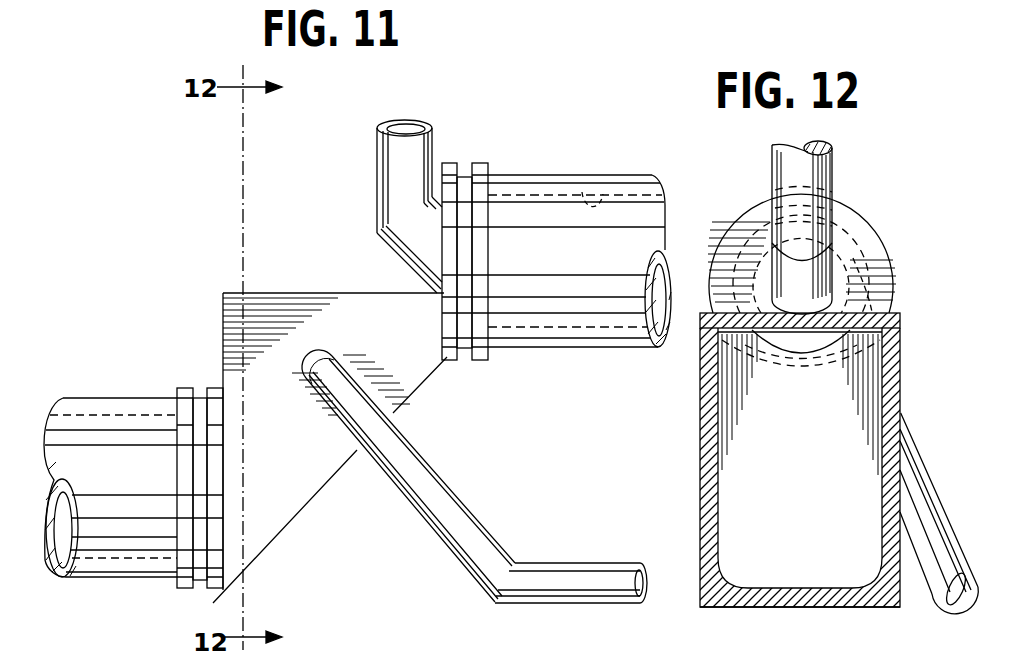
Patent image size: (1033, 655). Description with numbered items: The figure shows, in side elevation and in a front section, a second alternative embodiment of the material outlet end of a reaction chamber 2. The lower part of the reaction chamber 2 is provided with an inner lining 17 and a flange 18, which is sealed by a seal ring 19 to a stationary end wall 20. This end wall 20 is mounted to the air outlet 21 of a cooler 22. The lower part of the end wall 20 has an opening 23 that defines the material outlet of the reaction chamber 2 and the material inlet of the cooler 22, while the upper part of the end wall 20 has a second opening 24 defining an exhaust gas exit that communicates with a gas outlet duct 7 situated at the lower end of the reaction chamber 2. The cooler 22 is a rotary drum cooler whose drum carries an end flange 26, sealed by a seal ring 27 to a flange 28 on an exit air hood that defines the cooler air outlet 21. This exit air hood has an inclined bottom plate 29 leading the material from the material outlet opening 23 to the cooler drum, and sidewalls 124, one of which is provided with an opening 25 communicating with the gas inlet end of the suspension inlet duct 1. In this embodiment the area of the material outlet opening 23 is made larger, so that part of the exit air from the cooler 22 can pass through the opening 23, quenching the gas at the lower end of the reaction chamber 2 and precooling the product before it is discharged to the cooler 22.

In FIG. 11, the suspension inlet duct 1 is at (586, 582).
In FIG. 12, the suspension inlet duct 1 is at (962, 556).
In FIG. 11, the reaction chamber 2 is at (640, 214).
In FIG. 11, the gas outlet duct 7 is at (395, 170).
In FIG. 12, the gas outlet duct 7 is at (814, 170).
In FIG. 11, the inner lining 17 is at (605, 190).
In FIG. 12, the inner lining 17 is at (896, 287).
In FIG. 11, the flange 18 is at (482, 162).
In FIG. 11, the seal ring 19 is at (467, 349).
In FIG. 11, the stationary end wall 20 is at (447, 162).
In FIG. 12, the stationary end wall 20 is at (733, 236).
In FIG. 11, the air outlet 21 is at (230, 307).
In FIG. 12, the air outlet 21 is at (726, 590).
In FIG. 11, the cooler 22 is at (82, 432).
In FIG. 12, the opening 23 is at (784, 345).
In FIG. 11, the second opening 24 is at (422, 248).
In FIG. 12, the second opening 24 is at (790, 295).
In FIG. 11, the opening 25 is at (333, 354).
In FIG. 11, the end flange 26 is at (190, 592).
In FIG. 11, the seal ring 27 is at (200, 398).
In FIG. 11, the flange 28 is at (221, 592).
In FIG. 11, the inclined bottom plate 29 is at (340, 472).
In FIG. 12, the inclined bottom plate 29 is at (737, 490).
In FIG. 11, the sidewalls 124 is at (293, 493).
In FIG. 12, the sidewalls 124 is at (717, 421).